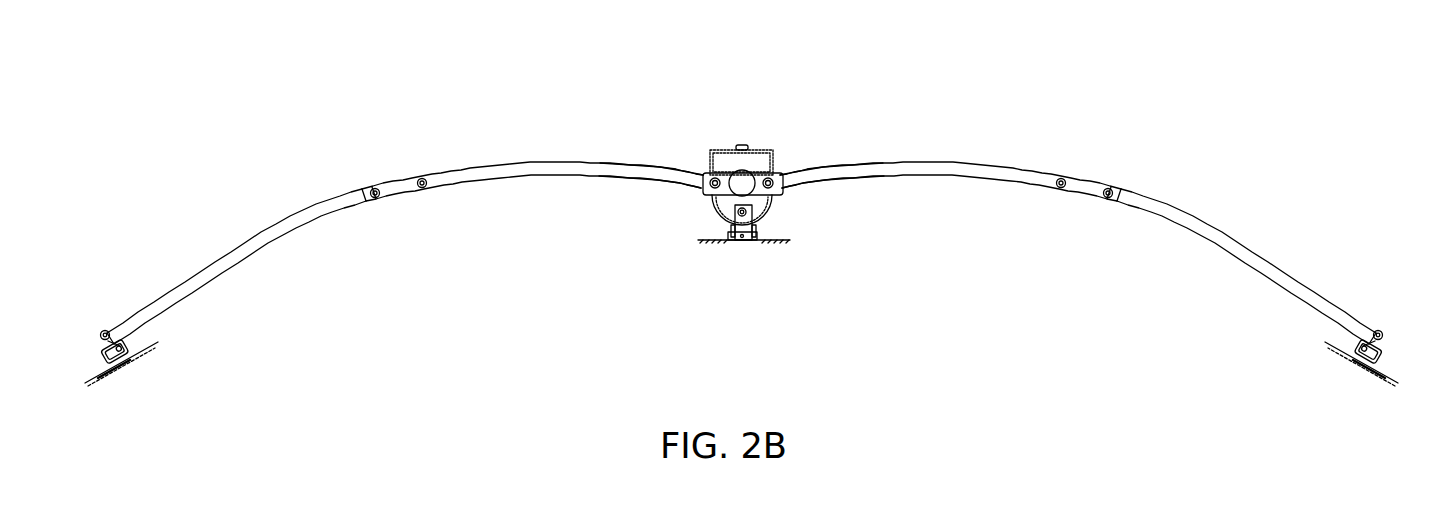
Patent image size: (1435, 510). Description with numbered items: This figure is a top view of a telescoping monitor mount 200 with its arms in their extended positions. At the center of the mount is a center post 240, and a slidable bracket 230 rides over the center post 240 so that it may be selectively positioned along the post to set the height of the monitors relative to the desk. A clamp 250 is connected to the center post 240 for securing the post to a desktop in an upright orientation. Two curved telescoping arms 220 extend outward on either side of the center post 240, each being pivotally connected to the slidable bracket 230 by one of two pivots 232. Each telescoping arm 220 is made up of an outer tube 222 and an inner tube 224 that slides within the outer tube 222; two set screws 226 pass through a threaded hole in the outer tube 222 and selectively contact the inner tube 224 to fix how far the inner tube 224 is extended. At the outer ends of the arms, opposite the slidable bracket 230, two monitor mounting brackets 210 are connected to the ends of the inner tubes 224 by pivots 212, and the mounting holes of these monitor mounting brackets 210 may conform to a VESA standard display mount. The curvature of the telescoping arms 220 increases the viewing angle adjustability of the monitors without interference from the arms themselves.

The telescoping monitor mount 200 is at (138, 118).
The monitor mounting bracket 210 is at (100, 372).
The pivot 212 is at (104, 330).
The telescoping arm 220 is at (537, 167).
The outer tube 222 is at (637, 167).
The inner tube 224 is at (240, 247).
The set screw 226 is at (365, 187).
The slidable bracket 230 is at (775, 186).
The pivot 232 is at (712, 180).
The center post 240 is at (750, 183).
The clamp 250 is at (725, 203).